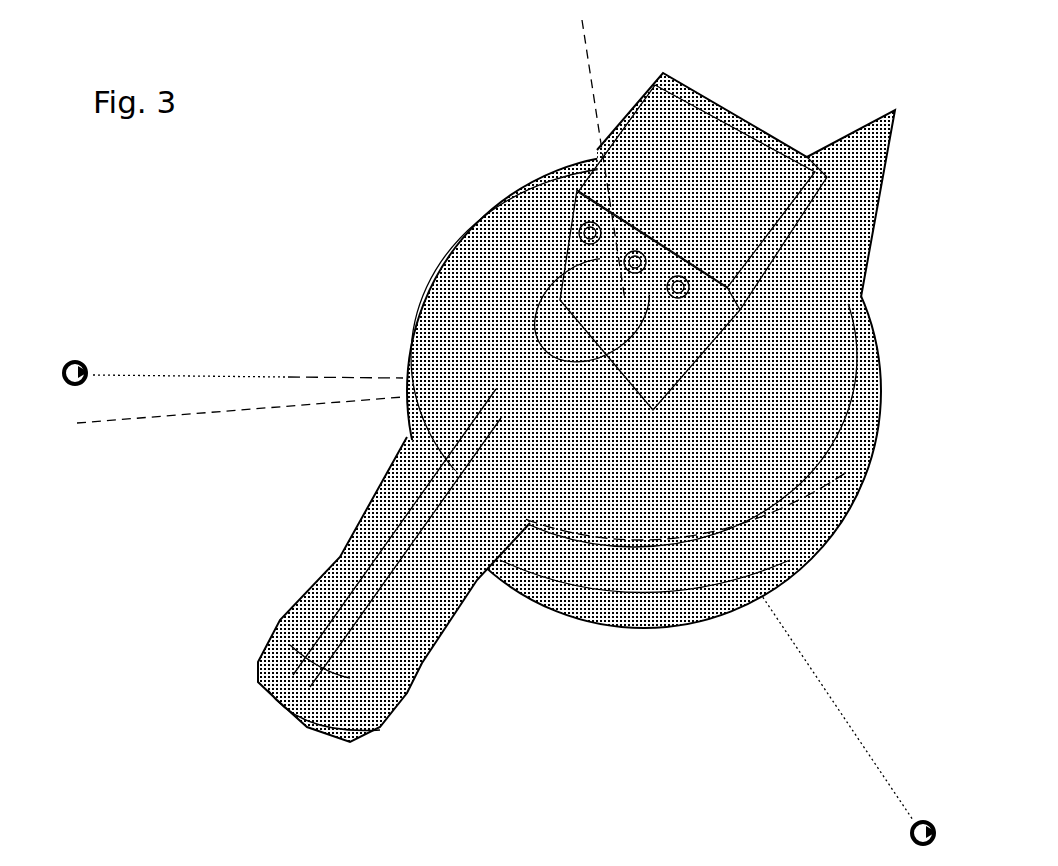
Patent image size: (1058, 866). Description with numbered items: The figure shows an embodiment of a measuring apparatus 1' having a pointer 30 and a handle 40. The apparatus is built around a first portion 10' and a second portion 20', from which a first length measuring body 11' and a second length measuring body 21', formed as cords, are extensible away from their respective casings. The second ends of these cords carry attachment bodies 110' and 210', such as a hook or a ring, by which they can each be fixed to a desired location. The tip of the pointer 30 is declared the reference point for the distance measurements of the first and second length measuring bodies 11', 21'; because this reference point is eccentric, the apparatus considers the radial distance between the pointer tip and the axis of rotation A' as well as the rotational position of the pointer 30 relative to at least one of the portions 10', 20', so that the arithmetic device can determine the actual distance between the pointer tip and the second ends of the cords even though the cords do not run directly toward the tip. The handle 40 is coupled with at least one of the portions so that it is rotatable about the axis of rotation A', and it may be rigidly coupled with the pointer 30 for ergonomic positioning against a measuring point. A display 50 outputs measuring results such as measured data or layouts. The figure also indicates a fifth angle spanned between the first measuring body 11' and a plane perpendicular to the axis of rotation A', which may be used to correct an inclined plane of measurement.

The measuring apparatus 1' is at (576, 410).
The first portion 10' is at (629, 391).
The first length measuring body 11' is at (248, 323).
The attachment body 110' is at (96, 337).
The second portion 20' is at (634, 437).
The second length measuring body 21' is at (843, 693).
The attachment body 210' is at (863, 837).
The pointer 30 is at (862, 106).
The handle 40 is at (422, 663).
The display 50 is at (687, 247).
The axis of rotation A' is at (568, 160).